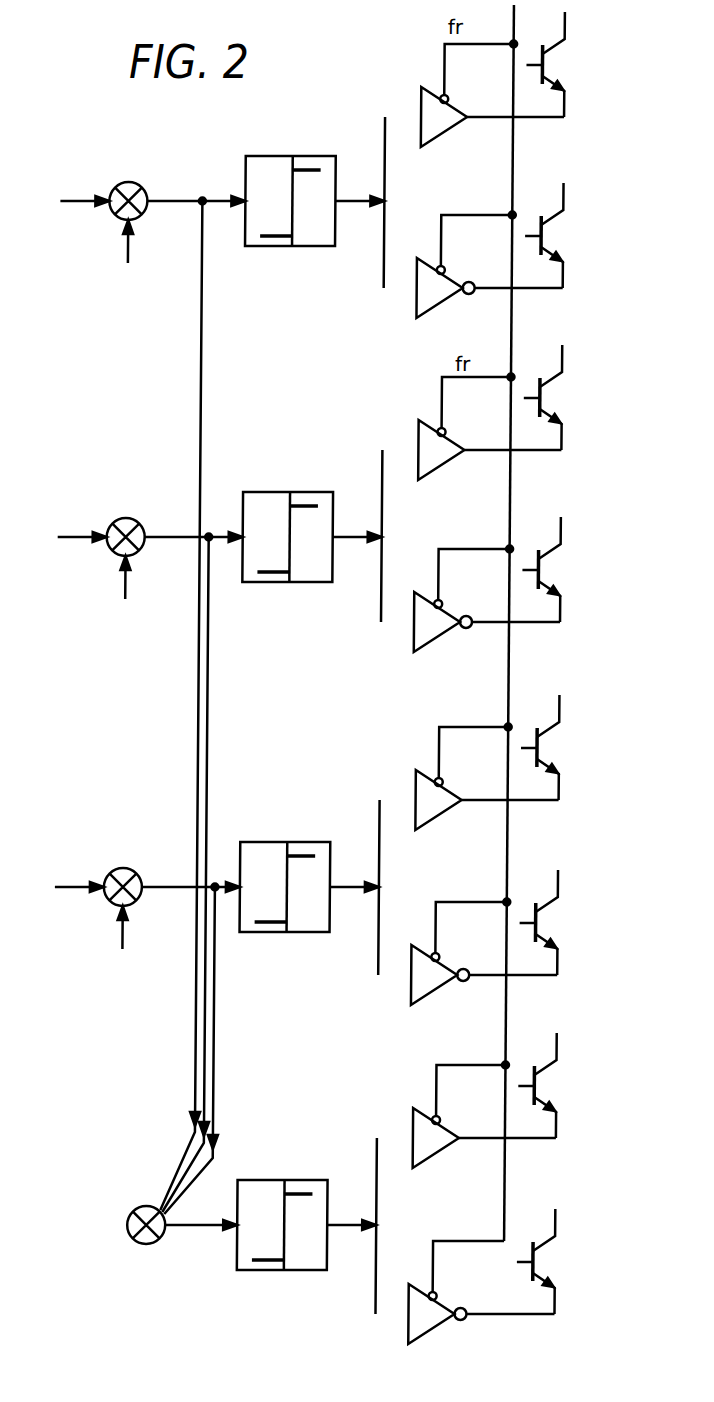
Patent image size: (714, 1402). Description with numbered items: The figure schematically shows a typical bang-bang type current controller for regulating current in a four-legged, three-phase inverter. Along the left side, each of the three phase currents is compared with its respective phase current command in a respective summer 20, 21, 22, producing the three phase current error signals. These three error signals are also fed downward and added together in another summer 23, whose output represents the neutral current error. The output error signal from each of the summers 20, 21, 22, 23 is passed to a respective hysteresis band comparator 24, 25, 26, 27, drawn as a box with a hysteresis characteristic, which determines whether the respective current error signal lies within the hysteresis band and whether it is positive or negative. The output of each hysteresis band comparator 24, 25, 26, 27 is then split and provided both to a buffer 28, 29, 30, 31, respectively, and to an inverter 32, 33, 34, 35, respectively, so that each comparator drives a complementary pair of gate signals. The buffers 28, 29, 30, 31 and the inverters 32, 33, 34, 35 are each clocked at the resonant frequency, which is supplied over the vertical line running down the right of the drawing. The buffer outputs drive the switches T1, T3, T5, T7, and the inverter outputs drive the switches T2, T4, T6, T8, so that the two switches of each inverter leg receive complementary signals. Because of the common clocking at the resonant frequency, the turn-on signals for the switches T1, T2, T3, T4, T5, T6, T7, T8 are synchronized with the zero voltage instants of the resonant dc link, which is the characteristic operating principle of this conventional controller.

The summer 20 is at (143, 212).
The summer 21 is at (143, 548).
The summer 22 is at (143, 898).
The summer 23 is at (141, 1240).
The hysteresis band comparator 24 is at (288, 156).
The hysteresis band comparator 25 is at (288, 492).
The hysteresis band comparator 26 is at (288, 842).
The hysteresis band comparator 27 is at (282, 1201).
The buffer 28 is at (447, 132).
The buffer 29 is at (447, 465).
The buffer 30 is at (447, 815).
The buffer 31 is at (447, 1153).
The inverter 32 is at (447, 301).
The inverter 33 is at (447, 635).
The inverter 34 is at (447, 988).
The inverter 35 is at (446, 1328).
The switch T1 is at (554, 50).
The switch T2 is at (554, 221).
The switch T3 is at (554, 383).
The switch T4 is at (554, 555).
The switch T5 is at (554, 733).
The switch T6 is at (554, 908).
The switch T7 is at (554, 1071).
The switch T8 is at (554, 1247).